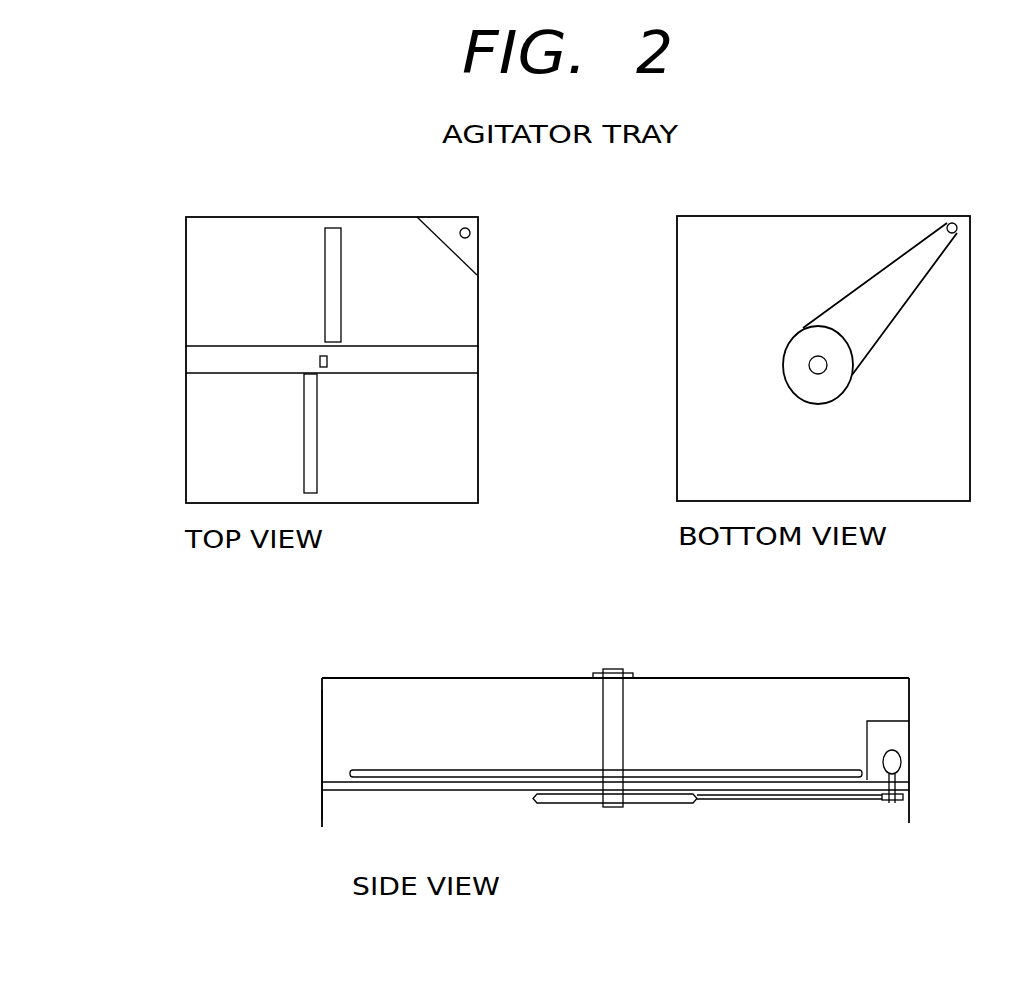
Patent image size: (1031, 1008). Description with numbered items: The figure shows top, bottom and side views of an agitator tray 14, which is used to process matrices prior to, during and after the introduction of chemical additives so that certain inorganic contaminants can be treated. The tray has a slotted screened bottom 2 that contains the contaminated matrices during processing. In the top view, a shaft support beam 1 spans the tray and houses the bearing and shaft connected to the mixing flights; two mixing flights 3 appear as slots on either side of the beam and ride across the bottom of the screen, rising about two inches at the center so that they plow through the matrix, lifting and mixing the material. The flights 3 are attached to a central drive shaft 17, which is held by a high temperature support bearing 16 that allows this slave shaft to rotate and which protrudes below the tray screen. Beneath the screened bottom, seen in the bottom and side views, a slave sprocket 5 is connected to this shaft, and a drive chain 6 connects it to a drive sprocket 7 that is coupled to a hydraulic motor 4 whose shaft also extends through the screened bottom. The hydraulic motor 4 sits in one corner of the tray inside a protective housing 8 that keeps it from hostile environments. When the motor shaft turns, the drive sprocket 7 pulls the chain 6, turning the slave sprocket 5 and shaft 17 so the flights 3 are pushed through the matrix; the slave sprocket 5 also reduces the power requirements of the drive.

The shaft support beam 1 is at (186, 352).
The slotted screened bottom of tray 2 is at (205, 413).
The mixing flight 3 is at (313, 462).
The hydraulic motor 4 is at (478, 231).
The slave sprocket 5 is at (803, 327).
The drive chain 6 is at (927, 283).
The drive sprocket 7 is at (950, 223).
The protective housing 8 is at (898, 720).
The agitator tray 14 is at (322, 730).
The high temperature support bearing 16 is at (630, 673).
The central drive shaft 17 is at (612, 672).